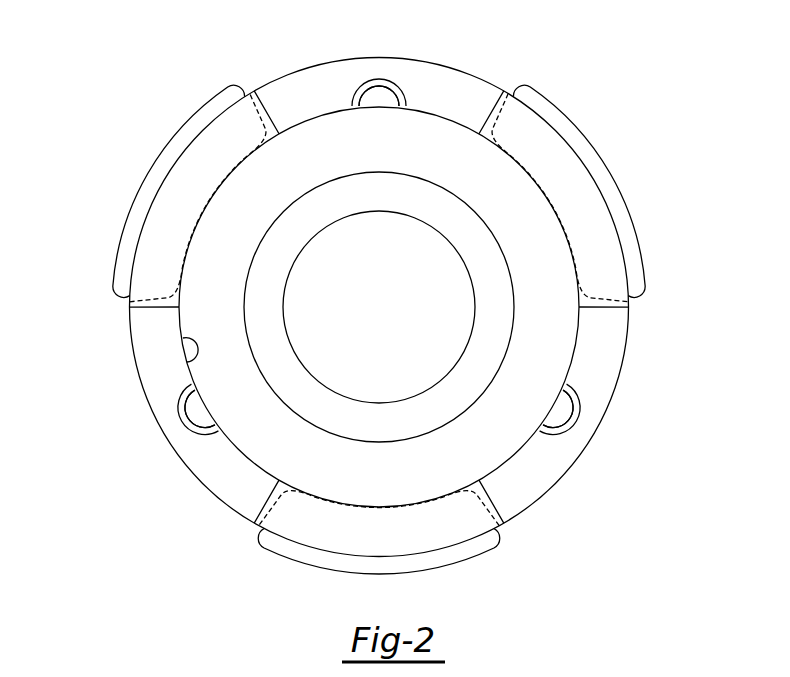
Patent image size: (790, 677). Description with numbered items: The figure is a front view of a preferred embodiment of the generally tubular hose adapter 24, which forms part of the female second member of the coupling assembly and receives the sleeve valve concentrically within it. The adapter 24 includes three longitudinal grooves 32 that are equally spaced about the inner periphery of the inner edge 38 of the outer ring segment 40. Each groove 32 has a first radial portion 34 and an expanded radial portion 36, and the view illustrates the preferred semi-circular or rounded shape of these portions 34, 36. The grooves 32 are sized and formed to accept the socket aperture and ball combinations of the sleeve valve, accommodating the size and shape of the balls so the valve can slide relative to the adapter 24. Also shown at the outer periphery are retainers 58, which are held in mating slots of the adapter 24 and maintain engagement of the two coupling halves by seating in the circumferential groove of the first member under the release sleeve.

The hose adapter 24 is at (627, 86).
The longitudinal grooves 32 is at (406, 80).
The first radial portion 34 is at (371, 96).
The expanded radial portion 36 is at (378, 83).
The inner edge 38 is at (183, 338).
The outer ring segment 40 is at (266, 503).
The retainers 58 is at (157, 165).